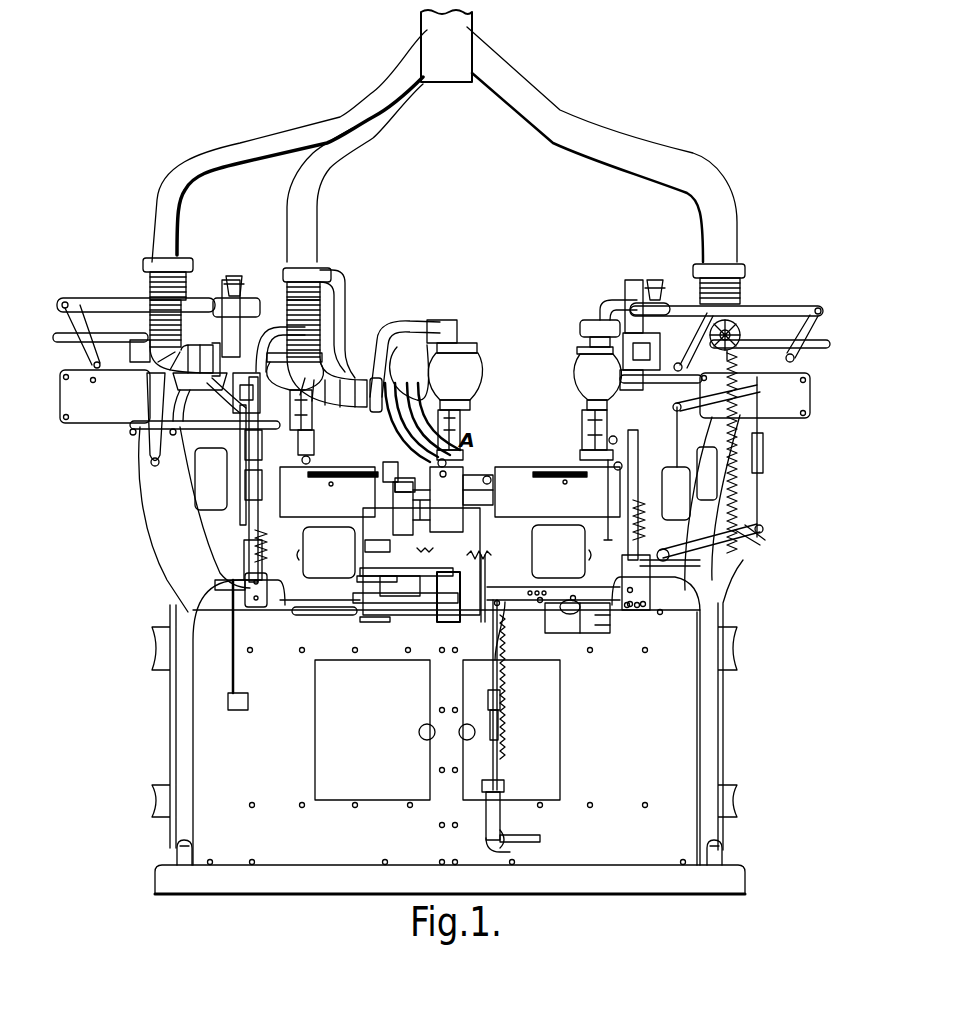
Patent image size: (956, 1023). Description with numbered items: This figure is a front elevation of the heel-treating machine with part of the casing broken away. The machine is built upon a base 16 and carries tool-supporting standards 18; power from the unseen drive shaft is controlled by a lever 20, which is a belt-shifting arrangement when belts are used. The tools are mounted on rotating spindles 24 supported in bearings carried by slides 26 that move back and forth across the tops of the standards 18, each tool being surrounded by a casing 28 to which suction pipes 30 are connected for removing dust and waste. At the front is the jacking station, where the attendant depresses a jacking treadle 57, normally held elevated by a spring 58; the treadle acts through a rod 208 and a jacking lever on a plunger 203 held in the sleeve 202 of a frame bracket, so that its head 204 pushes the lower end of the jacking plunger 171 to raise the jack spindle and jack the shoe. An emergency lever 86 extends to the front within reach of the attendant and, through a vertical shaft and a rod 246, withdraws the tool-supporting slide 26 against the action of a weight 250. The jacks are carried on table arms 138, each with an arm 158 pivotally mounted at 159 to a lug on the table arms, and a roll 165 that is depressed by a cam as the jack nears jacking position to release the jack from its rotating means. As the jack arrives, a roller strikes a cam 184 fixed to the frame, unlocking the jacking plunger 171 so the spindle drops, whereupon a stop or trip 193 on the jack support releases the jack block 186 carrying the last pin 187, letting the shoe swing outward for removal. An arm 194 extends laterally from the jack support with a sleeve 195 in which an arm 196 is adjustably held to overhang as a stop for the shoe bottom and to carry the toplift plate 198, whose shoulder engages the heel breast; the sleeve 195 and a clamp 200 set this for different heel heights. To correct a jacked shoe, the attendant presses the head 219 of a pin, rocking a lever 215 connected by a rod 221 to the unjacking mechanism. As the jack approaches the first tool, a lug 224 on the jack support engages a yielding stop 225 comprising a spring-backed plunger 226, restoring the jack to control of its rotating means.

The base 16 is at (228, 888).
The tool-supporting standards 18 is at (167, 551).
The lever 20 is at (243, 494).
The rotating spindles 24 is at (253, 483).
The slides 26 is at (113, 368).
The casing 28 is at (225, 297).
The suction pipes 30 is at (281, 134).
The jacking treadle 57 is at (490, 845).
The spring 58 is at (503, 677).
The emergency lever 86 is at (583, 623).
The table arms 138 is at (492, 482).
The arm 158 is at (410, 533).
The pivot 159 is at (400, 510).
The roll 165 is at (582, 428).
The jacking plunger 171 is at (373, 587).
The cam 184 is at (440, 560).
The jack block 186 is at (462, 425).
The last pin 187 is at (467, 407).
The stop or trip 193 is at (614, 437).
The arm 194 is at (400, 463).
The sleeve 195 is at (358, 357).
The arm 196 is at (383, 330).
The toplift plate 198 is at (577, 347).
The clamp 200 is at (380, 412).
The sleeve 202 is at (447, 590).
The plunger 203 is at (447, 627).
The head 204 is at (482, 574).
The rod 208 is at (500, 647).
The lever 215 is at (497, 497).
The head 219 is at (412, 478).
The rod 221 is at (497, 527).
The lug 224 is at (432, 470).
The yielding stop 225 is at (617, 463).
The plunger 226 is at (618, 460).
The rod 246 is at (667, 567).
The weight 250 is at (705, 473).